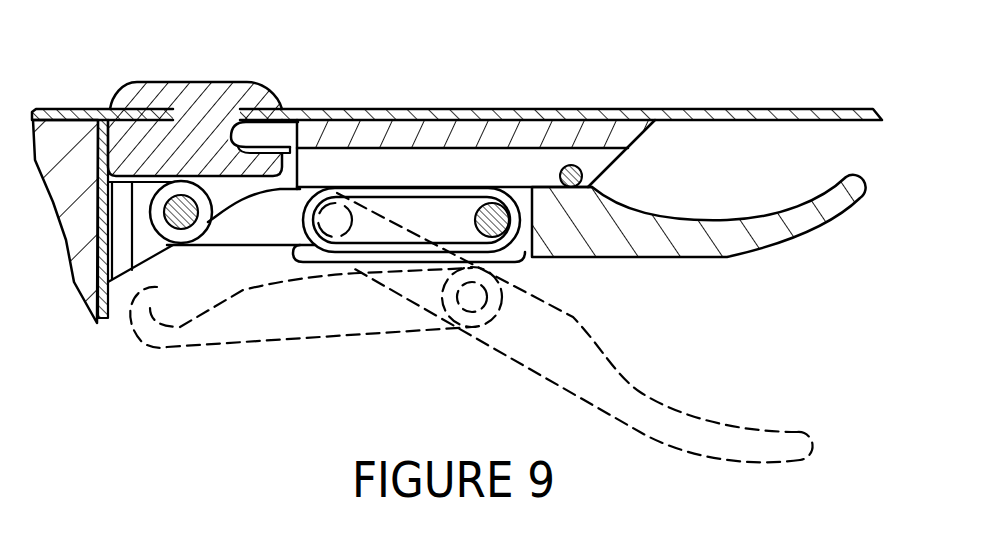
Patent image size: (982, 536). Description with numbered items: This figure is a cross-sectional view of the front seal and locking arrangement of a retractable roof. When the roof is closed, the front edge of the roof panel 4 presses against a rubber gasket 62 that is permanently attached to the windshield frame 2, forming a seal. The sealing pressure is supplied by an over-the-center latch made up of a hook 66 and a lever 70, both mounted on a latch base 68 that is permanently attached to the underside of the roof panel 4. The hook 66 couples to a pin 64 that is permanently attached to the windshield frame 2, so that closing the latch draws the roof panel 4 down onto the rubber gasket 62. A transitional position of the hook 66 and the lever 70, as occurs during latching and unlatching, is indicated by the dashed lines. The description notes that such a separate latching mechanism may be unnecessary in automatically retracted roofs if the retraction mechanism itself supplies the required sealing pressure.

The windshield frame 2 is at (43, 131).
The roof panel 4 is at (390, 113).
The rubber gasket 62 is at (198, 98).
The pin 64 is at (174, 244).
The hook 66 is at (247, 237).
The latch base 68 is at (525, 133).
The lever 70 is at (648, 230).